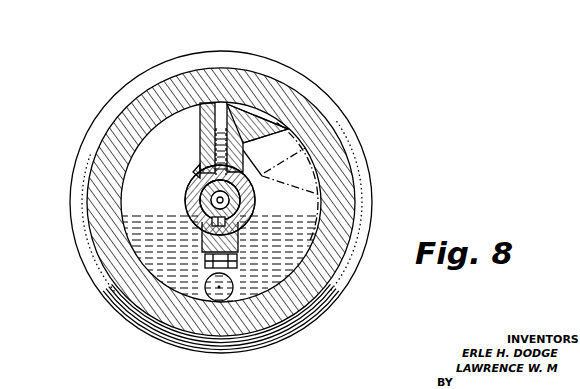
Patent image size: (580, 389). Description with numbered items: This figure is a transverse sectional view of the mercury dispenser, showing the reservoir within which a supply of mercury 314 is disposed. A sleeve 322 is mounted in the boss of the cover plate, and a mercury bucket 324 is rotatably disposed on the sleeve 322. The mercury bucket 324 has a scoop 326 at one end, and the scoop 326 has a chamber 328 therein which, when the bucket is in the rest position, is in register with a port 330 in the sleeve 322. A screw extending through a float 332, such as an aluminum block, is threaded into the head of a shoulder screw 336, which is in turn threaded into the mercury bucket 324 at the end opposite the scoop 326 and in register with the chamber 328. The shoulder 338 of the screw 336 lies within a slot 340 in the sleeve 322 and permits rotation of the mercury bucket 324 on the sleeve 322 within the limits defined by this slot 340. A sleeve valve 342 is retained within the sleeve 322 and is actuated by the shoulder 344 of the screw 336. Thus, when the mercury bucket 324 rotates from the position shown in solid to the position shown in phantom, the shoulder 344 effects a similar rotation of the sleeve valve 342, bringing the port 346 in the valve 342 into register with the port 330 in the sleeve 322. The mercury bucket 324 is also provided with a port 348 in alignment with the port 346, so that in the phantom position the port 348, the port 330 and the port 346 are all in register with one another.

The mercury 314 is at (290, 256).
The sleeve 322 is at (190, 212).
The mercury bucket 324 is at (188, 116).
The scoop 326 is at (266, 112).
The chamber 328 is at (225, 104).
The port 330 is at (221, 142).
The float 332 is at (224, 295).
The shoulder screw 336 is at (207, 260).
The shoulder 338 is at (203, 222).
The slot 340 is at (212, 202).
The sleeve valve 342 is at (250, 199).
The shoulder 344 is at (195, 190).
The port 346 is at (244, 176).
The port 348 is at (198, 172).